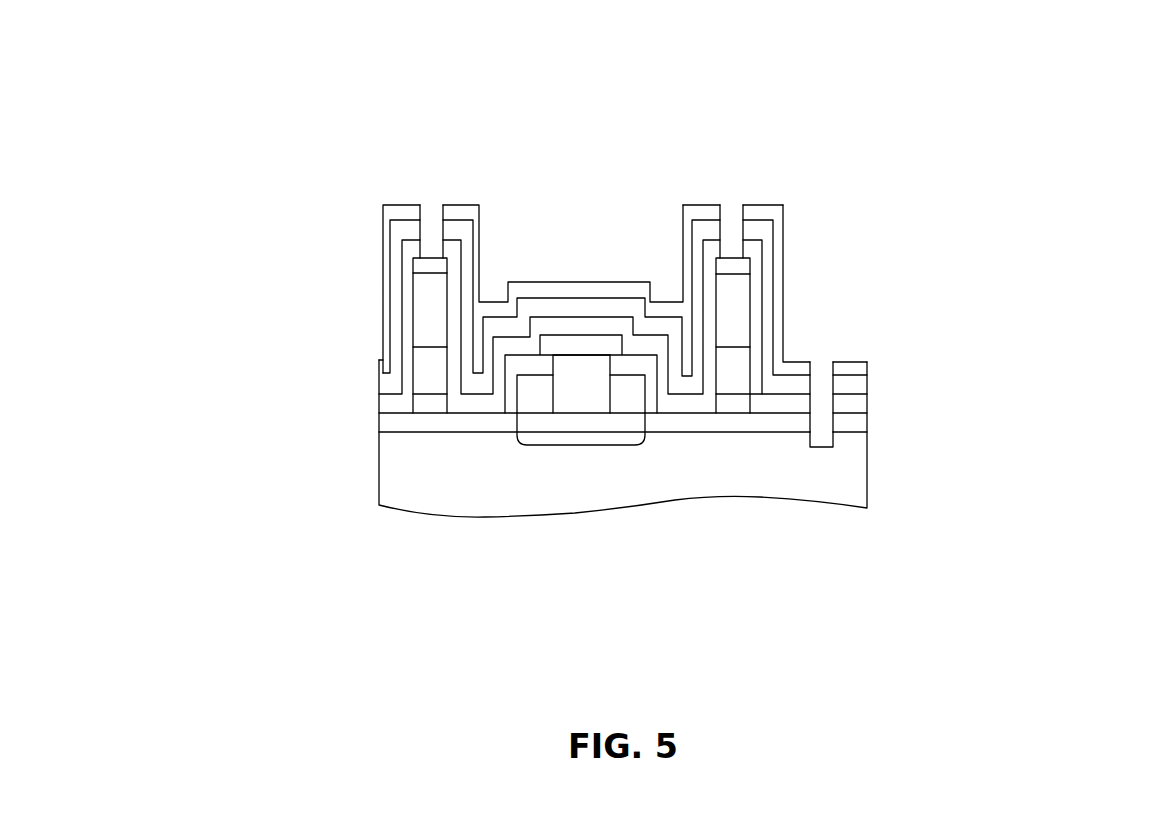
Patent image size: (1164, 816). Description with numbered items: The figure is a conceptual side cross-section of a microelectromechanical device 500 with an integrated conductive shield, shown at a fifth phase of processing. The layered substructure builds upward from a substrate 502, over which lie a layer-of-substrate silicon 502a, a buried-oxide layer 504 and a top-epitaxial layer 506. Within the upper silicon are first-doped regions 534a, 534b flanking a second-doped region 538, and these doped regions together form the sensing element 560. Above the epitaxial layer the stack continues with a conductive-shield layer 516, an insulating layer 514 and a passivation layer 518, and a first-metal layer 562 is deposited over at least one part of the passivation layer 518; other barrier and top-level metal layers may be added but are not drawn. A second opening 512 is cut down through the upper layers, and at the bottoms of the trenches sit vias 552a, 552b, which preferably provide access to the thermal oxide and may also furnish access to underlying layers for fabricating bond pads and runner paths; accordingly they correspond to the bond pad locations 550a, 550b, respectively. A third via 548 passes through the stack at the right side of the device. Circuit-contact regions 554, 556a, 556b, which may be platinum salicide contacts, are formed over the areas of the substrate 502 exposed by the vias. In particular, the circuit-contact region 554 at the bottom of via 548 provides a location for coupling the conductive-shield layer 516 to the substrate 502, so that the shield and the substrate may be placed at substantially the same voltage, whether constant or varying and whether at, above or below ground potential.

The microelectromechanical device 500 is at (656, 68).
The second opening 512 is at (656, 175).
The insulating layer 514 is at (577, 343).
The conductive-shield layer 516 is at (387, 404).
The passivation layer 518 is at (867, 388).
The substrate 502 is at (867, 475).
The layer-of-substrate silicon 502a is at (742, 403).
The buried-oxide layer 504 is at (867, 425).
The top-epitaxial layer 506 is at (733, 369).
The first-doped region 534a is at (627, 391).
The first-doped region 534b is at (535, 391).
The second-doped region 538 is at (582, 383).
The via 548 is at (819, 366).
The bond pad location 550a is at (733, 238).
The bond pad location 550b is at (431, 240).
The via 552a is at (729, 197).
The via 552b is at (425, 192).
The circuit-contact region 554 is at (822, 437).
The circuit-contact region 556a is at (743, 265).
The circuit-contact region 556b is at (437, 267).
The sensing element 560 is at (582, 446).
The first-metal layer 562 is at (867, 367).